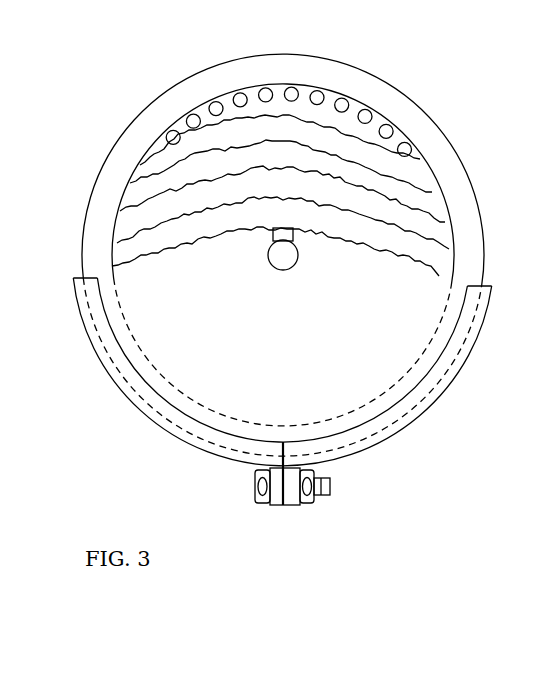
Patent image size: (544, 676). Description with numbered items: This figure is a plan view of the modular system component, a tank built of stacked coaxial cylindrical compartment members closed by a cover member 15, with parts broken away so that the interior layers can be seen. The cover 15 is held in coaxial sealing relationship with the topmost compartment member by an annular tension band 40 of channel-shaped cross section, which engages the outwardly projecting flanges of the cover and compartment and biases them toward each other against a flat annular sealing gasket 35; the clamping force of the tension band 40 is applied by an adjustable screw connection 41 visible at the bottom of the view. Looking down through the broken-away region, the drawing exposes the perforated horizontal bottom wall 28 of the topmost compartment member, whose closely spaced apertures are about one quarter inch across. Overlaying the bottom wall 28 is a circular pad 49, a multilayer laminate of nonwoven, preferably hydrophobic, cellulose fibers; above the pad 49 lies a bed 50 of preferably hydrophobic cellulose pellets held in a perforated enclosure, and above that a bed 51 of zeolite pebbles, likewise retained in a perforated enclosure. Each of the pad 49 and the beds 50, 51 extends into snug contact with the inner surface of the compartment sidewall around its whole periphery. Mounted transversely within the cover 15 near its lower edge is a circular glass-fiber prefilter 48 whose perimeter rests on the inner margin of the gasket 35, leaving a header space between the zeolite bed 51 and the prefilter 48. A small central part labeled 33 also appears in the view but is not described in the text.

The cover member 15 is at (193, 382).
The perforated horizontal bottom wall 28 is at (333, 97).
The hub pivot 33 is at (298, 265).
The flat annular sealing gasket 35 is at (97, 220).
The annular tension band 40 is at (427, 413).
The adjustable screw connection 41 is at (330, 494).
The circular prefilter 48 is at (447, 265).
The circular pad 49 is at (418, 173).
The bed of cellulose pellets 50 is at (432, 198).
The bed of zeolite pebbles 51 is at (445, 227).